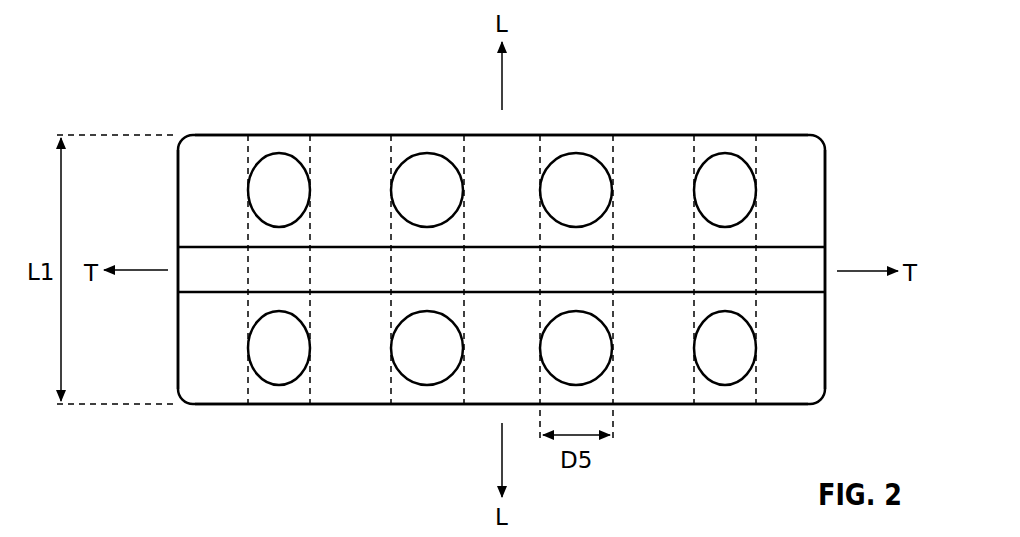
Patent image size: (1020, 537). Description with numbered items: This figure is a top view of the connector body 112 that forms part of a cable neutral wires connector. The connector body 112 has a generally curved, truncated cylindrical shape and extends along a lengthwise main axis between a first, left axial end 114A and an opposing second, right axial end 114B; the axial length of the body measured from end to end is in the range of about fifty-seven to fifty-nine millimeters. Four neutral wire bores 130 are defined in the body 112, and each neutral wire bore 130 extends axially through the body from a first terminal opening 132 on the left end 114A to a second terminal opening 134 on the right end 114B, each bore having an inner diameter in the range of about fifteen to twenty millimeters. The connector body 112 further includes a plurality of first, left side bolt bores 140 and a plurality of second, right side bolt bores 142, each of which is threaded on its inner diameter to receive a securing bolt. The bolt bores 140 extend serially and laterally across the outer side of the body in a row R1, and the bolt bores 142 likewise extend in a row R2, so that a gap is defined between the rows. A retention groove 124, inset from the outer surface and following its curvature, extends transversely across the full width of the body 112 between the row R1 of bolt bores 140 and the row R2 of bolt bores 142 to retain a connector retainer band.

The connector body 112 is at (736, 50).
The first axial end 114A is at (212, 135).
The second axial end 114B is at (205, 405).
The retention groove 124 is at (818, 262).
The neutral wire bores 130 is at (600, 135).
The first terminal opening 132 is at (282, 135).
The second terminal opening 134 is at (258, 405).
The first bolt bores 140 is at (249, 190).
The second bolt bores 142 is at (249, 365).
The row R1 is at (500, 148).
The row R2 is at (509, 361).